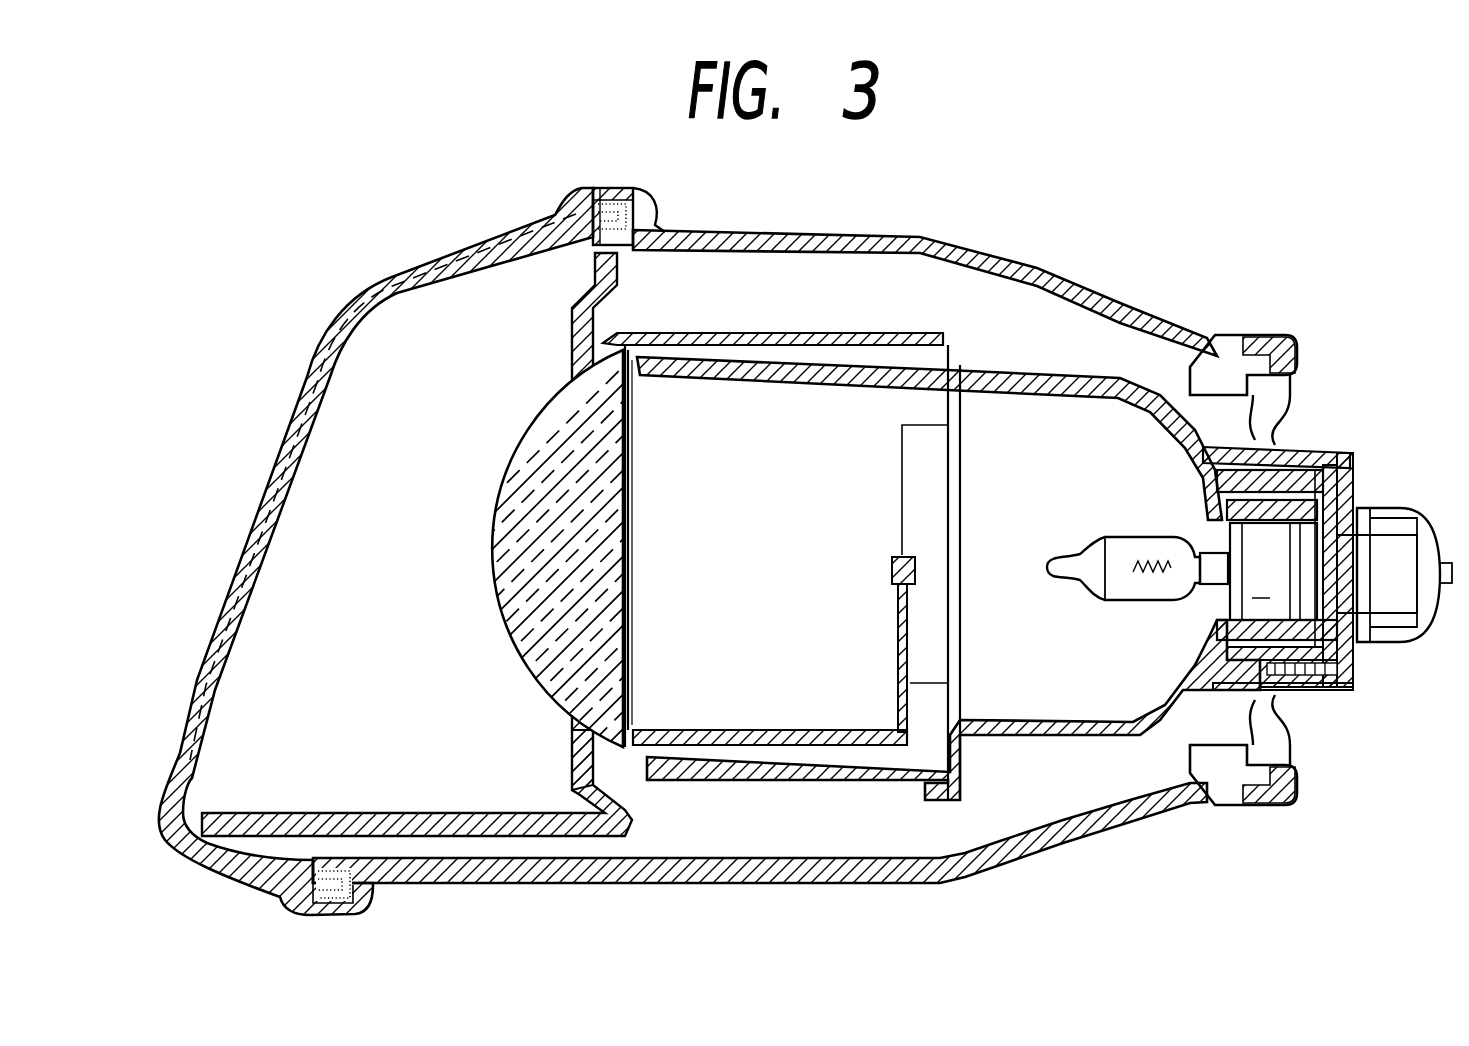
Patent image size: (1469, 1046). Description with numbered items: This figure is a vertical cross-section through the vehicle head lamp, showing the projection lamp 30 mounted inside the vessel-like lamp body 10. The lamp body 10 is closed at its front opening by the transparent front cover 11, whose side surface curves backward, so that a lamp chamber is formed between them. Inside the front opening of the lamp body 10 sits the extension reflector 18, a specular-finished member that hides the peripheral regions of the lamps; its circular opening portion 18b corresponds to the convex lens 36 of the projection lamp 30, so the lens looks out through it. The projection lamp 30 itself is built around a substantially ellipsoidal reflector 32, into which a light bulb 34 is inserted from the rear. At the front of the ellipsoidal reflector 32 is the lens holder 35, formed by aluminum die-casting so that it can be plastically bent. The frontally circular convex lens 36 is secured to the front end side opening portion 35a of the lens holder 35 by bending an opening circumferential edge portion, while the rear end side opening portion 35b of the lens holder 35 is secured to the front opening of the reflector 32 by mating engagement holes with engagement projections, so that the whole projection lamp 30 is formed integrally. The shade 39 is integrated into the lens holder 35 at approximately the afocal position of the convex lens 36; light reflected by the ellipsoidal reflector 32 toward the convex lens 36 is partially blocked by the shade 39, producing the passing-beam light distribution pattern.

The lamp body 10 is at (930, 238).
The front cover 11 is at (270, 480).
The extension reflector 18 is at (322, 813).
The circular opening portion 18b is at (572, 762).
The projection lamp 30 is at (931, 332).
The ellipsoidal reflector 32 is at (1160, 416).
The light bulb 34 is at (1125, 548).
The lens holder 35 is at (738, 336).
The front end side opening portion 35a is at (700, 584).
The rear end side opening portion 35b is at (935, 502).
The convex lens 36 is at (544, 418).
The shade 39 is at (895, 560).